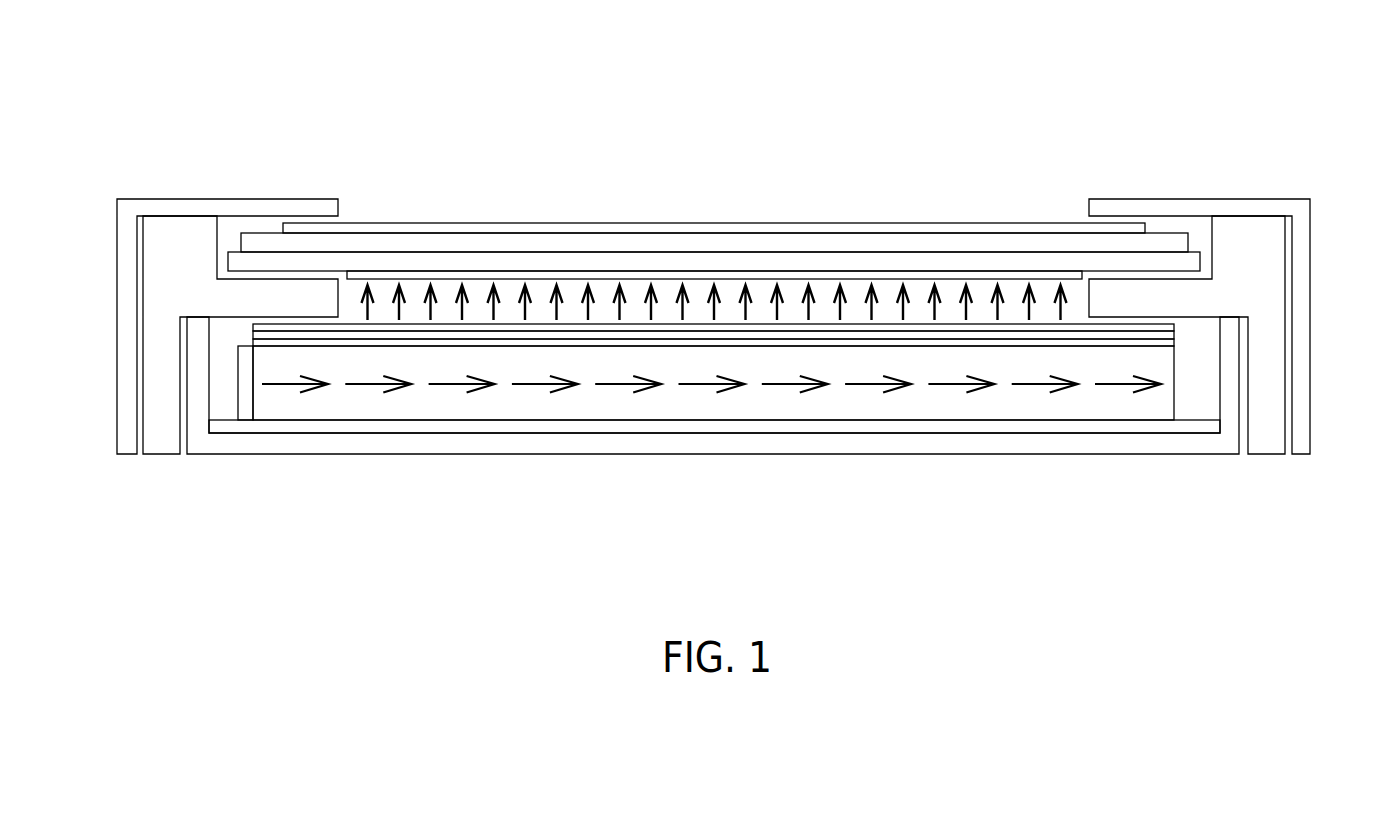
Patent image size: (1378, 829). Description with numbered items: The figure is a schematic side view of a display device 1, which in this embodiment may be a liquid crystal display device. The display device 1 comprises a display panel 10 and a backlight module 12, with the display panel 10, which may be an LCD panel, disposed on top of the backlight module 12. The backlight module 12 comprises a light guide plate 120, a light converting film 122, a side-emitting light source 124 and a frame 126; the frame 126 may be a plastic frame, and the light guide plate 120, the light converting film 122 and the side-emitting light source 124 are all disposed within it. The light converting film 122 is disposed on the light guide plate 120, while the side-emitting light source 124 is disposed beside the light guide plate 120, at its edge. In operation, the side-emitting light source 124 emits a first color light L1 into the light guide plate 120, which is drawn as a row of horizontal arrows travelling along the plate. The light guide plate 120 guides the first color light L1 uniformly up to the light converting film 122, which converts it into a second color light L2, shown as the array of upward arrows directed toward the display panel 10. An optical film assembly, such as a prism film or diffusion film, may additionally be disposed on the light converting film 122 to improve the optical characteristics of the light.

The display device 1 is at (1220, 80).
The display panel 10 is at (926, 213).
The backlight module 12 is at (927, 485).
The light guide plate 120 is at (673, 405).
The light converting film 122 is at (822, 347).
The side-emitting light source 124 is at (248, 413).
The frame 126 is at (172, 257).
The first color light L1 is at (532, 388).
The second color light L2 is at (1058, 312).